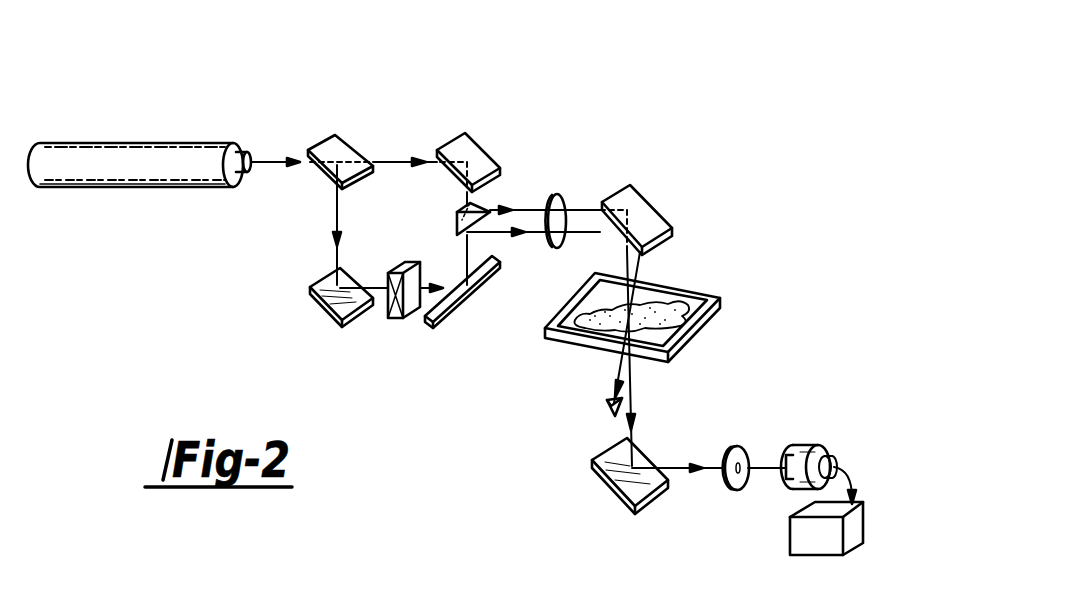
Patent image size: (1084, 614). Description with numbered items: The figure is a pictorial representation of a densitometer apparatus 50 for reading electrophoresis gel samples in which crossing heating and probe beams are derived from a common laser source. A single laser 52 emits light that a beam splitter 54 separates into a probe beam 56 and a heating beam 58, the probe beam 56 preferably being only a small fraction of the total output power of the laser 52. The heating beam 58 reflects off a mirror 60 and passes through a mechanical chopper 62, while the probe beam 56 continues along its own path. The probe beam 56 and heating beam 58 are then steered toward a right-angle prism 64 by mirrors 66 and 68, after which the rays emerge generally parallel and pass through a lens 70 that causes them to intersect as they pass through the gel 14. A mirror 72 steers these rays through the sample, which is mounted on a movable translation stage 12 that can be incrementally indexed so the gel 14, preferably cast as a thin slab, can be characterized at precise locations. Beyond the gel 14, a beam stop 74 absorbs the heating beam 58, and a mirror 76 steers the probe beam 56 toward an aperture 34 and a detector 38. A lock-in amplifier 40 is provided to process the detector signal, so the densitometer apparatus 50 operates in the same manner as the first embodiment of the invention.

The densitometer apparatus 50 is at (574, 130).
The laser 52 is at (118, 152).
The beam splitter 54 is at (336, 142).
The probe beam 56 is at (425, 166).
The heating beam 58 is at (337, 205).
The mirror 60 is at (322, 306).
The mechanical chopper 62 is at (410, 310).
The right-angle prism 64 is at (460, 218).
The mirror 66 is at (450, 306).
The mirror 68 is at (480, 157).
The lens 70 is at (557, 194).
The mirror 72 is at (640, 192).
The translation stage 12 is at (563, 340).
The gel 14 is at (673, 303).
The beam stop 74 is at (605, 404).
The mirror 76 is at (612, 483).
The aperture 34 is at (735, 446).
The detector 38 is at (814, 444).
The lock-in amplifier 40 is at (790, 537).